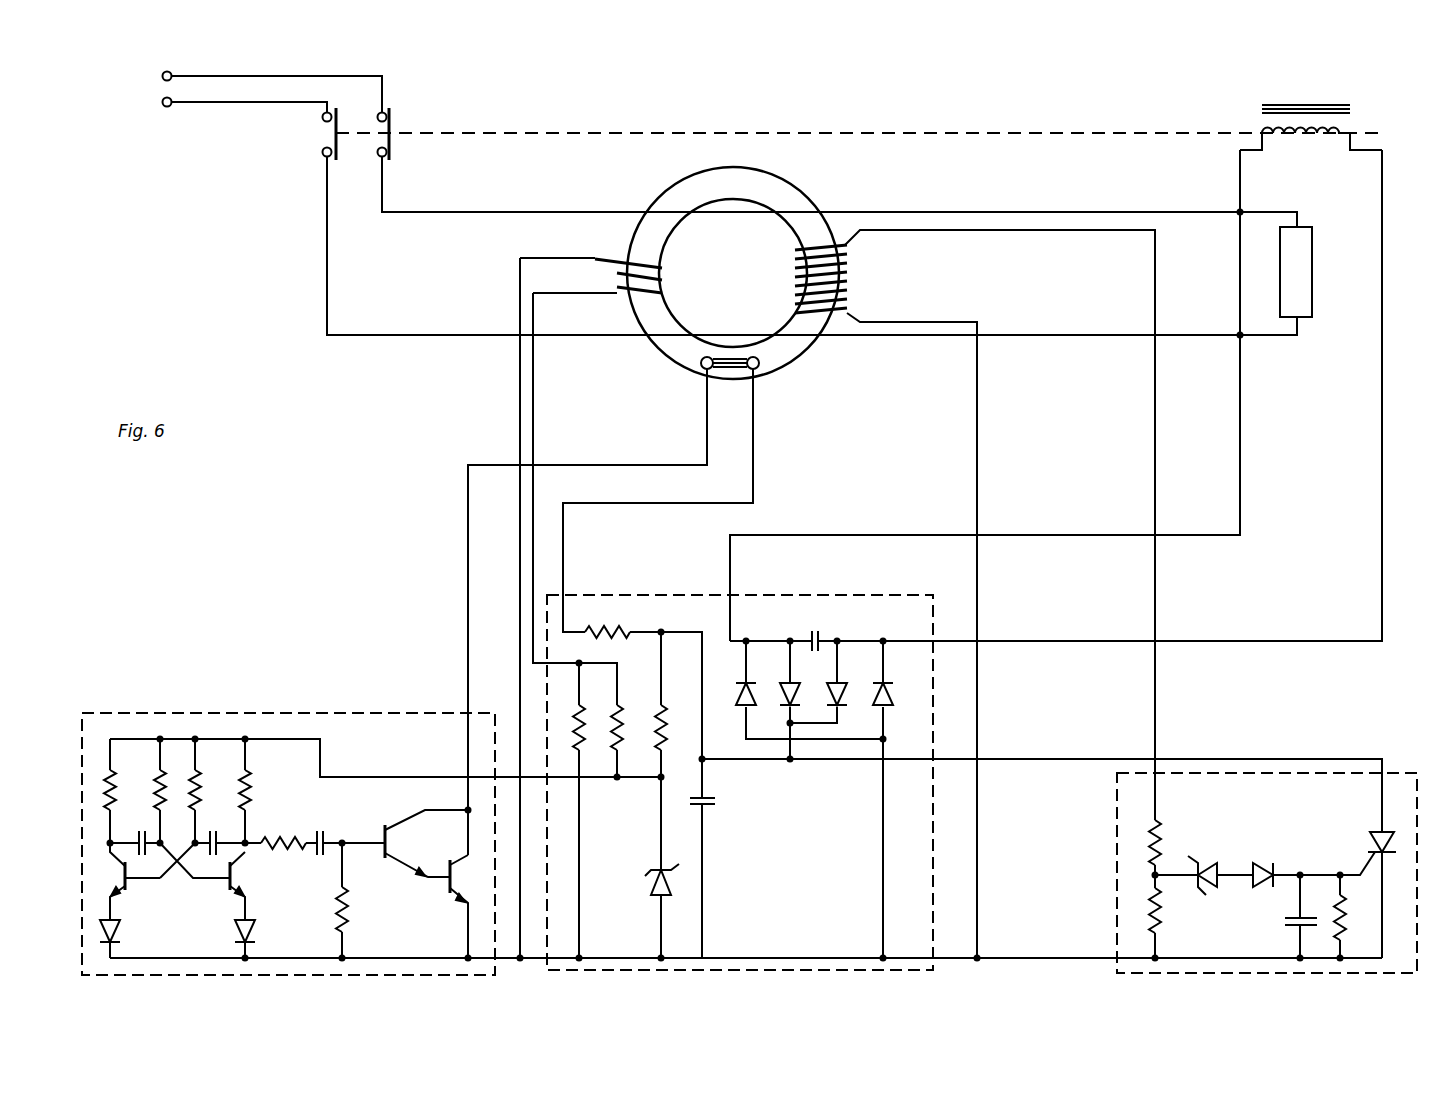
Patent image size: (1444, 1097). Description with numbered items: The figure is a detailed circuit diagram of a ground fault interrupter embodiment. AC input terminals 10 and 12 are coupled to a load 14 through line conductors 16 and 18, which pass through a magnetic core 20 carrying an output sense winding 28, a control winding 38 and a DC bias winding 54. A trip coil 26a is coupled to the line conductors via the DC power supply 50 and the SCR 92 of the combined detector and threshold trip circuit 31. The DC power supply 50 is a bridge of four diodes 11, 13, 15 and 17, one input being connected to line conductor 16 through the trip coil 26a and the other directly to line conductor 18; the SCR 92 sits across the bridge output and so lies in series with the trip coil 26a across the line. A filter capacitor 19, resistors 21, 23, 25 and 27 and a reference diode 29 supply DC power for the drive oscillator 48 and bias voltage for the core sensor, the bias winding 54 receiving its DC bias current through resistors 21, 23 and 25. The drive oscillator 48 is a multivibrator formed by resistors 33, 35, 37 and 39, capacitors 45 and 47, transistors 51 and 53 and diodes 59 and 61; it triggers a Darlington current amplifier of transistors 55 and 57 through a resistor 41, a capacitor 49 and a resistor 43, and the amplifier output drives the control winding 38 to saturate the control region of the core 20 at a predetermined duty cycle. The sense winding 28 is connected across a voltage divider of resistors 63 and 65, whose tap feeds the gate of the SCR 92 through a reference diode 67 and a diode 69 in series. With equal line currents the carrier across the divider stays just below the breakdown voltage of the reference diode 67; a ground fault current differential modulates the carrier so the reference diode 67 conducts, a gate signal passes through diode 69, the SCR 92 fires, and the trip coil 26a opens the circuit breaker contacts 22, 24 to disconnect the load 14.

The AC input terminal 10 is at (162, 76).
The AC input terminal 12 is at (162, 102).
The load 14 is at (1312, 250).
The line conductor 16 is at (455, 212).
The line conductor 18 is at (455, 335).
The magnetic core 20 is at (665, 190).
The circuit breaker contact 22 is at (392, 120).
The circuit breaker contact 24 is at (333, 138).
The trip coil 26a is at (1360, 118).
The output sense winding 28 is at (855, 278).
The control winding 38 is at (728, 382).
The DC bias winding 54 is at (668, 270).
The drive oscillator 48 is at (128, 713).
The DC power supply 50 is at (688, 595).
The combined detector and threshold trip circuit 31 is at (1117, 800).
The diode 11 is at (736, 690).
The diode 13 is at (785, 702).
The diode 15 is at (845, 700).
The diode 17 is at (893, 690).
The capacitor 19 is at (708, 803).
The resistor 21 is at (663, 715).
The resistor 23 is at (621, 715).
The resistor 25 is at (583, 715).
The resistor 27 is at (600, 630).
The reference diode 29 is at (651, 880).
The resistor 33 is at (112, 778).
The resistor 35 is at (158, 800).
The resistor 37 is at (196, 778).
The resistor 39 is at (246, 778).
The resistor 41 is at (285, 838).
The resistor 43 is at (346, 912).
The capacitor 45 is at (140, 831).
The capacitor 47 is at (213, 831).
The capacitor 49 is at (324, 838).
The transistor 51 is at (122, 878).
The transistor 53 is at (232, 878).
The transistor 55 is at (390, 845).
The transistor 57 is at (455, 875).
The diode 59 is at (118, 930).
The diode 61 is at (238, 930).
The resistor 63 is at (1160, 840).
The resistor 65 is at (1160, 920).
The reference diode 67 is at (1200, 866).
The diode 69 is at (1262, 866).
The SCR 92 is at (1372, 842).